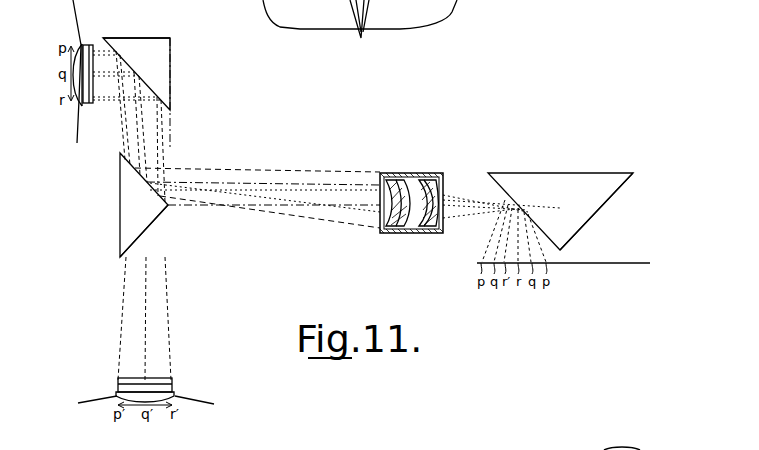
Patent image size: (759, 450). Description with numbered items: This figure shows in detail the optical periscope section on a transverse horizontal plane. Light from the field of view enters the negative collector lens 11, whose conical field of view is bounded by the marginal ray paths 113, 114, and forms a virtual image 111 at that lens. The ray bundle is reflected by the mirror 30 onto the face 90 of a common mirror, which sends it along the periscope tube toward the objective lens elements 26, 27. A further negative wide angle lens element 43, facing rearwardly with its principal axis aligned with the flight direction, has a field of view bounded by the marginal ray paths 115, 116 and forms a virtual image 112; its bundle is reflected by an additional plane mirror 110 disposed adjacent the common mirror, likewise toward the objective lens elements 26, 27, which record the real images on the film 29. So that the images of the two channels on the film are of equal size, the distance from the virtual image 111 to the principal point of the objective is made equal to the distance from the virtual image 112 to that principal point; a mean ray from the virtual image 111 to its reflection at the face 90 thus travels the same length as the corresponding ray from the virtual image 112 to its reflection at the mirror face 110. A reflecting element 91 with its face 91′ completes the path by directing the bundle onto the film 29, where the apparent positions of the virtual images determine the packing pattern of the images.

The marginal ray path 113 is at (78, 13).
The virtual image 111 is at (70, 66).
The marginal ray path 114 is at (77, 128).
The lens 11 is at (83, 44).
The mirror 30 is at (148, 88).
The mirror face 90 is at (135, 168).
The reflecting plane mirror 110 is at (137, 240).
The objective lens element 27 is at (403, 168).
The objective lens element 26 is at (440, 185).
The prism 91 is at (528, 220).
The prism face 91′ is at (614, 193).
The film 29 is at (603, 265).
The marginal ray path 115 is at (97, 398).
The marginal ray path 116 is at (197, 401).
The lens element 43 is at (163, 392).
The virtual image 112 is at (135, 406).